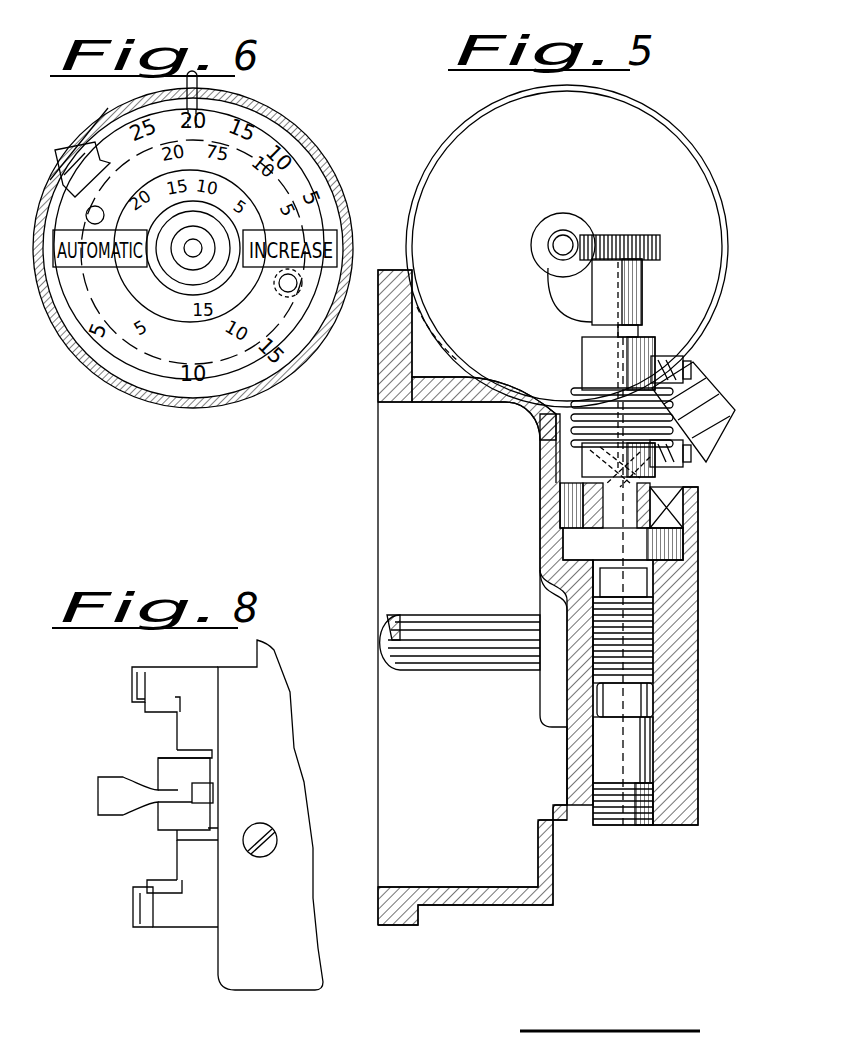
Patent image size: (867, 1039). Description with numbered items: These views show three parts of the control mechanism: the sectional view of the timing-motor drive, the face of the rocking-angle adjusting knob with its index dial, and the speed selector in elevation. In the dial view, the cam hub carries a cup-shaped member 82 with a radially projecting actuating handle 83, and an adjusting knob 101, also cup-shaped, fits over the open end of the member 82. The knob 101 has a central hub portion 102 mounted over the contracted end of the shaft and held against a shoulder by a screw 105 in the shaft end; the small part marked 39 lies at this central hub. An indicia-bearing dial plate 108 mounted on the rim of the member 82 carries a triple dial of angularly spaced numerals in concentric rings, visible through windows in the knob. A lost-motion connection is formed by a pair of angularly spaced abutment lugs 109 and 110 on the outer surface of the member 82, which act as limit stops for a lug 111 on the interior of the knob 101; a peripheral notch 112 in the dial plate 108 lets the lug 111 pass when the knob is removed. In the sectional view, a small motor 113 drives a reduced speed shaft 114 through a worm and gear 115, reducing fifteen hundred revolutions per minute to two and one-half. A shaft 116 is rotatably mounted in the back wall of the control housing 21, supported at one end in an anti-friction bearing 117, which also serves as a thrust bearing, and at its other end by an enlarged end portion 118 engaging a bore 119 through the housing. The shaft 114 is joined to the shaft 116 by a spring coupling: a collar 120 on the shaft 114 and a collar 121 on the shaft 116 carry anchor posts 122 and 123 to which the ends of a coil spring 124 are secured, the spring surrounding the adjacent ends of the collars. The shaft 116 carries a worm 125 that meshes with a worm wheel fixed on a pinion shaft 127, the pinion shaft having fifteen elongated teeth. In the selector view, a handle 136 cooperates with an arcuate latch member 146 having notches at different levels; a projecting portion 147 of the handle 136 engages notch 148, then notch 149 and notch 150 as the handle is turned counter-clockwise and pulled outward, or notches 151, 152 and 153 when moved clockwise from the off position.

In FIG. 5, the housing / plate 21 is at (552, 862).
In FIG. 8, the housing / plate 21 is at (290, 792).
In FIG. 6, the shaft 39 is at (196, 262).
In FIG. 6, the cup-shaped member 82 is at (305, 326).
In FIG. 6, the actuating handle 83 is at (187, 80).
In FIG. 6, the adjusting knob 101 is at (330, 163).
In FIG. 6, the central hub portion 102 is at (170, 260).
In FIG. 6, the screw 105 is at (205, 252).
In FIG. 6, the dial plate 108 is at (263, 142).
In FIG. 6, the abutment lug 109 is at (118, 128).
In FIG. 6, the abutment lug 110 is at (262, 366).
In FIG. 6, the lug 111 is at (78, 172).
In FIG. 6, the peripheral notch 112 is at (81, 216).
In FIG. 5, the motor 113 is at (698, 197).
In FIG. 5, the reduced speed shaft 114 is at (608, 330).
In FIG. 5, the worm and gear 115 is at (587, 234).
In FIG. 5, the shaft 116 is at (630, 505).
In FIG. 5, the anti-friction bearing 117 is at (667, 542).
In FIG. 5, the enlarged end portion 118 is at (633, 742).
In FIG. 5, the bore 119 is at (655, 698).
In FIG. 5, the collar 120 is at (640, 352).
In FIG. 5, the collar 121 is at (585, 457).
In FIG. 5, the anchor post 122 is at (676, 362).
In FIG. 5, the anchor post 123 is at (705, 452).
In FIG. 5, the coil spring 124 is at (578, 390).
In FIG. 5, the worm 125 is at (652, 632).
In FIG. 5, the pinion shaft 127 is at (458, 630).
In FIG. 8, the handle 136 is at (173, 770).
In FIG. 8, the latch member 146 is at (193, 927).
In FIG. 8, the projecting portion 147 is at (214, 790).
In FIG. 8, the notch 148 is at (212, 750).
In FIG. 8, the notch 149 is at (174, 698).
In FIG. 8, the notch 150 is at (142, 677).
In FIG. 8, the notch 151 is at (213, 833).
In FIG. 8, the notch 152 is at (182, 890).
In FIG. 8, the notch 153 is at (156, 927).